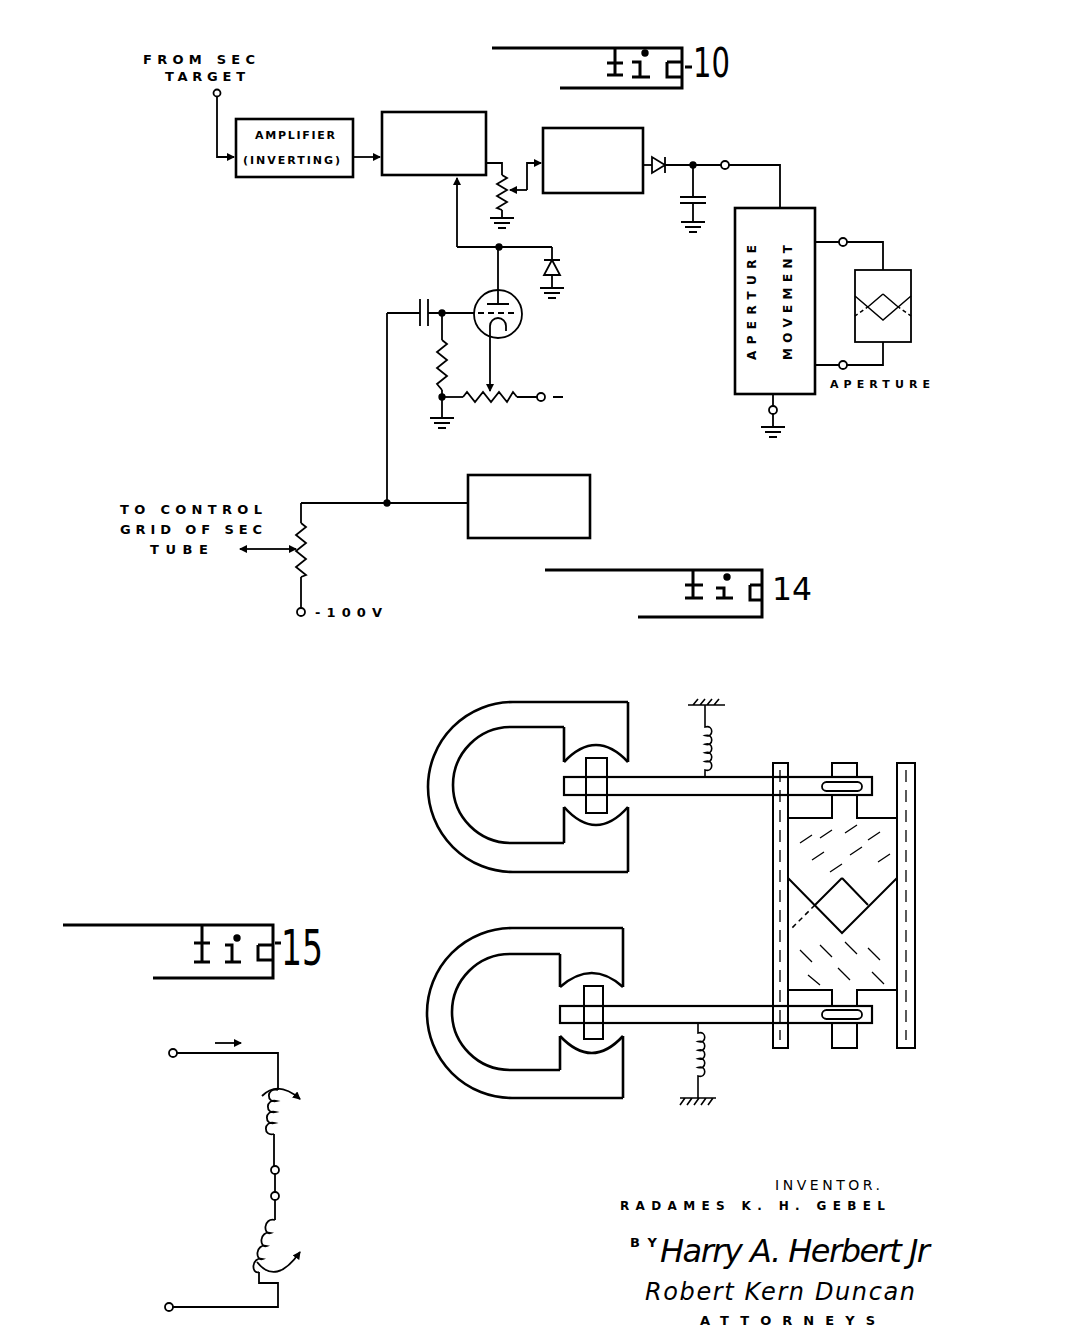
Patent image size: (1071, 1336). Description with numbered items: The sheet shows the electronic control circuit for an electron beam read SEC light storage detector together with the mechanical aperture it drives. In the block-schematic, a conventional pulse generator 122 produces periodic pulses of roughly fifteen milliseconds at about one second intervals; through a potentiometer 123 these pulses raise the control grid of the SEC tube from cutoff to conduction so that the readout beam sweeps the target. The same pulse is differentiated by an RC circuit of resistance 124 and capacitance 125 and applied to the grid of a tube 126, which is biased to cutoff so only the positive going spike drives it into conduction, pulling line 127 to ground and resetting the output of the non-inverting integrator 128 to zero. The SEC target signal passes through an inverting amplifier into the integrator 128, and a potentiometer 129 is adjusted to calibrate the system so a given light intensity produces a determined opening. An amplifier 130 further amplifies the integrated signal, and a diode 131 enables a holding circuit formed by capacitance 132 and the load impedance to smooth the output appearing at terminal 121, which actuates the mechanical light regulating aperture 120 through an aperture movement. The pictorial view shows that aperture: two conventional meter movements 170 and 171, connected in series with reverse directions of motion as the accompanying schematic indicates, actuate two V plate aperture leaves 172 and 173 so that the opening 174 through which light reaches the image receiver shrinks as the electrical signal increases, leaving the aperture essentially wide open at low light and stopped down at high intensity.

In FIG. 10, the mechanical light regulating aperture 120 is at (900, 270).
In FIG. 10, the terminal 121 is at (729, 161).
In FIG. 10, the pulse generator 122 is at (590, 500).
In FIG. 10, the potentiometer 123 is at (305, 543).
In FIG. 10, the resistance 124 is at (432, 360).
In FIG. 10, the capacitance 125 is at (431, 305).
In FIG. 10, the tube 126 is at (521, 327).
In FIG. 10, the line 127 is at (513, 247).
In FIG. 10, the integrator 128 is at (447, 112).
In FIG. 10, the potentiometer 129 is at (501, 195).
In FIG. 10, the amplifier 130 is at (626, 119).
In FIG. 10, the diode 131 is at (660, 157).
In FIG. 10, the capacitance 132 is at (697, 195).
In FIG. 14, the meter movement 170 is at (548, 702).
In FIG. 14, the meter movement 171 is at (520, 928).
In FIG. 14, the V plate aperture leaf 172 is at (858, 767).
In FIG. 14, the V plate aperture leaf 173 is at (840, 1049).
In FIG. 14, the opening 174 is at (845, 916).